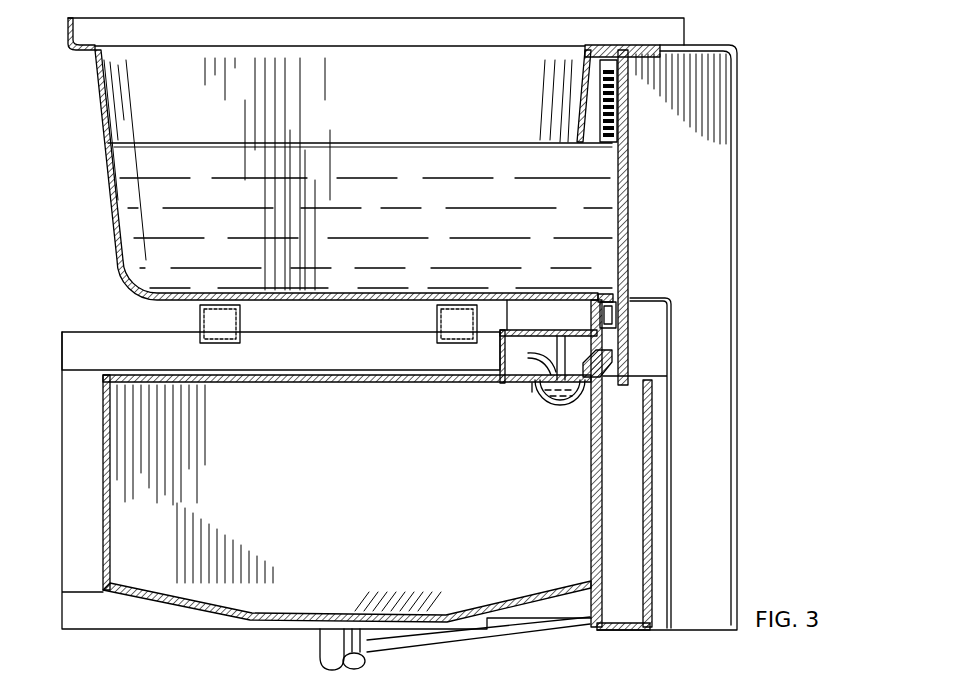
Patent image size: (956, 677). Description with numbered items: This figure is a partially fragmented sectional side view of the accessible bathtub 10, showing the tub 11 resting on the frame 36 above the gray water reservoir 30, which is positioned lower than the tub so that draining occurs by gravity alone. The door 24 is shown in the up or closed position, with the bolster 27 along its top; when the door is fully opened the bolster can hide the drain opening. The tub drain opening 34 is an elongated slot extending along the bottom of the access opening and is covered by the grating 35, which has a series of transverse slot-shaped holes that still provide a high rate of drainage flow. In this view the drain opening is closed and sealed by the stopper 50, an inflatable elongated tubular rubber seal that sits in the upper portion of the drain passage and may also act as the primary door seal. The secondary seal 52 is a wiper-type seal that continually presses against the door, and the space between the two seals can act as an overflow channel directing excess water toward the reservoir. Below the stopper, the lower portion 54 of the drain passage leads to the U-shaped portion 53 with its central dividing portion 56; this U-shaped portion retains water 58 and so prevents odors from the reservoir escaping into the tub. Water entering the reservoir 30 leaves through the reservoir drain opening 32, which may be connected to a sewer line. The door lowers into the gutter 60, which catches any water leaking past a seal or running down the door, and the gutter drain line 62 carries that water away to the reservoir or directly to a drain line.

The accessible bathtub 10 is at (767, 64).
The tub 11 is at (97, 83).
The door 24 is at (630, 160).
The bolster 27 is at (633, 52).
The gray water reservoir 30 is at (123, 470).
The reservoir drain opening 32 is at (343, 614).
The tub drain opening 34 is at (608, 292).
The grating 35 is at (618, 112).
The frame 36 is at (108, 332).
The stopper 50 is at (620, 298).
The secondary seal 52 is at (617, 348).
The U-shaped portion 53 is at (529, 394).
The lower portion of the drain passage 54 is at (580, 360).
The central dividing portion 56 is at (557, 337).
The water 58 is at (547, 400).
The gutter 60 is at (652, 490).
The gutter drain line 62 is at (530, 632).